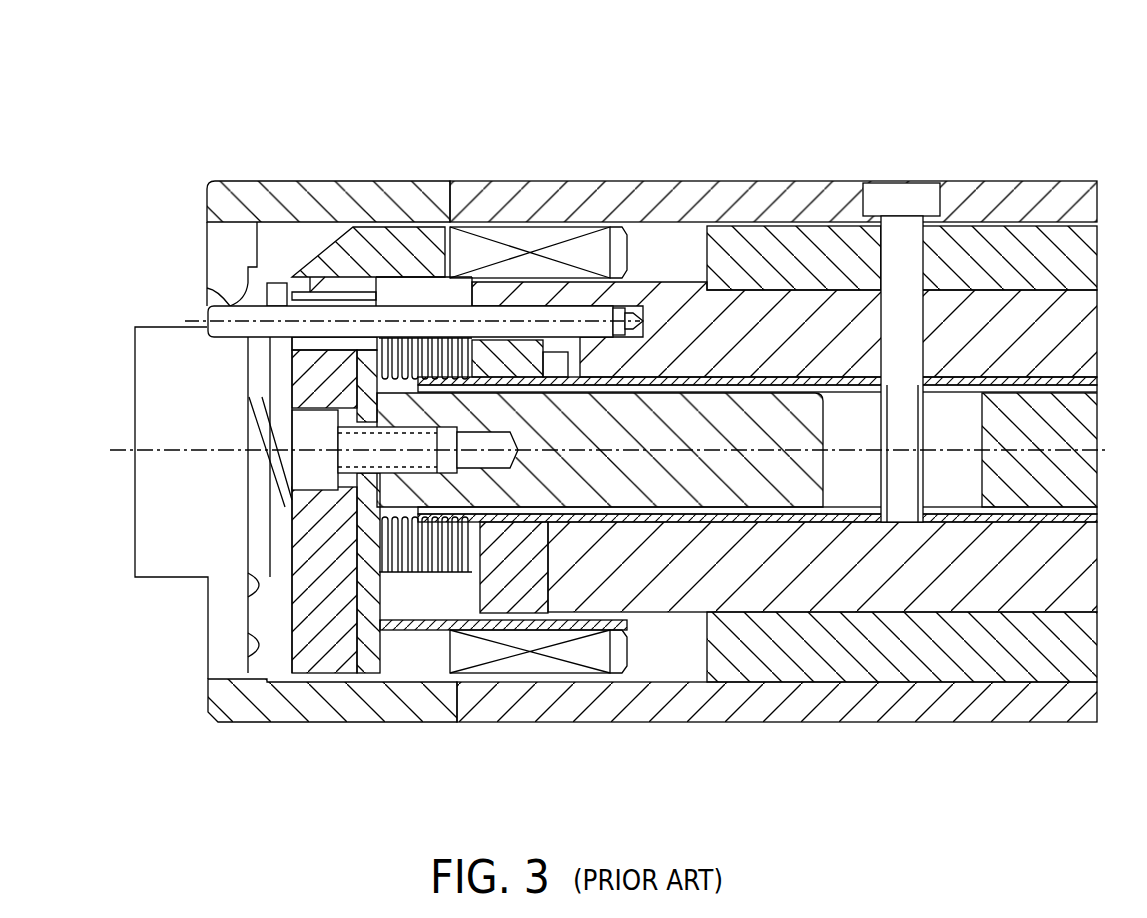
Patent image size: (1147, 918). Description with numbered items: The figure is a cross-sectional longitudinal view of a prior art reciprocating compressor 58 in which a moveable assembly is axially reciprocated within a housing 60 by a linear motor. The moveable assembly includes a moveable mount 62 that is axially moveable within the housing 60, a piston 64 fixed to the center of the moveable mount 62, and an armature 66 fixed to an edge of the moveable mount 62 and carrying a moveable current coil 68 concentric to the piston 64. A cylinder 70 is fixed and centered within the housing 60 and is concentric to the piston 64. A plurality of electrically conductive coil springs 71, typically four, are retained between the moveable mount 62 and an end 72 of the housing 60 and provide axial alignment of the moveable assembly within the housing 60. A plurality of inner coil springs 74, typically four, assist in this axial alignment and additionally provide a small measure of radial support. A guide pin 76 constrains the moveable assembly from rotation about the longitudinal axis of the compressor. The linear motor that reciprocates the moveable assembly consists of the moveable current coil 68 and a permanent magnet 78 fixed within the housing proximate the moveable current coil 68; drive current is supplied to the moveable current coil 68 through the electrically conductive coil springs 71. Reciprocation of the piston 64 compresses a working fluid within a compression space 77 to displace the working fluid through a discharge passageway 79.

The reciprocating compressor 58 is at (649, 108).
The housing 60 is at (588, 706).
The moveable mount 62 is at (297, 630).
The piston 64 is at (810, 507).
The armature 66 is at (388, 221).
The moveable current coil 68 is at (500, 232).
The cylinder 70 is at (847, 523).
The electrically conductive coil springs 71 is at (262, 476).
The end of housing 72 is at (213, 703).
The inner coil springs 74 is at (421, 585).
The guide pin 76 is at (222, 300).
The compression space 77 is at (860, 497).
The permanent magnet 78 is at (768, 238).
The discharge passageway 79 is at (905, 205).